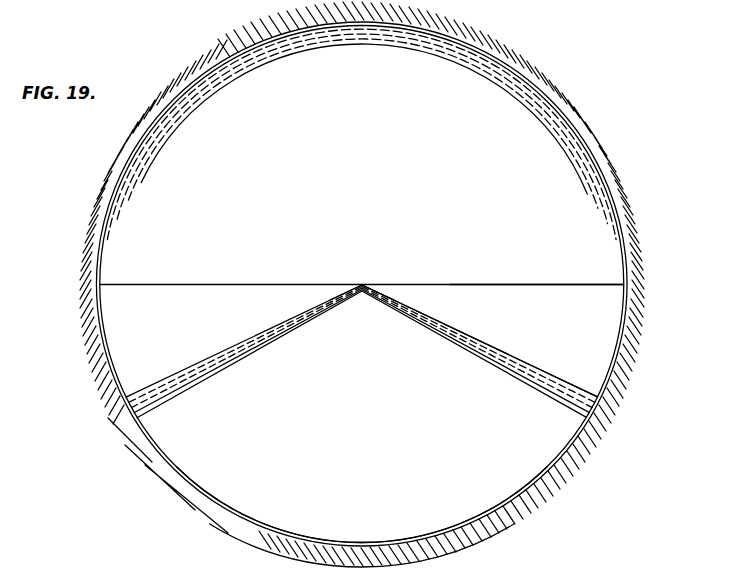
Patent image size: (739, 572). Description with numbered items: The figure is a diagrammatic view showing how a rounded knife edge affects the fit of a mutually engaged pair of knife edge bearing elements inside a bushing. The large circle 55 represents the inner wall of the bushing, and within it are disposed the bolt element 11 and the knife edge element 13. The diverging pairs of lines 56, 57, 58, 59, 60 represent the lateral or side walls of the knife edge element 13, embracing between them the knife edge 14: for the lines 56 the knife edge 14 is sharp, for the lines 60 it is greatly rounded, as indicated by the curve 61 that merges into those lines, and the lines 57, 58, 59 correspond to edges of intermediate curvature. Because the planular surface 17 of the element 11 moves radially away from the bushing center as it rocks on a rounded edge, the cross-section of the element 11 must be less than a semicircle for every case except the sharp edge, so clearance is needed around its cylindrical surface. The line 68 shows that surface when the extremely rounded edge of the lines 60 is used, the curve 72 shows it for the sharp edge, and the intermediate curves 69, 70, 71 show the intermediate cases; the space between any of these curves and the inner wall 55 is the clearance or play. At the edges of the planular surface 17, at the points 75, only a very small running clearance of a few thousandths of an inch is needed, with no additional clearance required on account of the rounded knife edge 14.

The bolt element 11 is at (563, 160).
The knife edge element 13 is at (521, 466).
The knife edge 14 is at (366, 290).
The planular surface 17 is at (526, 286).
The inner wall of the bushing 55 is at (636, 242).
The side wall lines for a sharp knife edge 56 is at (290, 320).
The side wall lines for an intermediate knife edge 57 is at (268, 338).
The side wall lines for an intermediate knife edge 58 is at (245, 353).
The side wall lines for an intermediate knife edge 59 is at (223, 367).
The side wall lines for a greatly rounded knife edge 60 is at (200, 382).
The rounded edge curve 61 is at (392, 297).
The surface line for extremely rounded edge 68 is at (205, 95).
The intermediate surface curve 69 is at (217, 78).
The intermediate surface curve 70 is at (229, 61).
The intermediate surface curve 71 is at (241, 47).
The surface curve for sharp edge 72 is at (258, 42).
The edges of the planular surface 75 is at (102, 283).